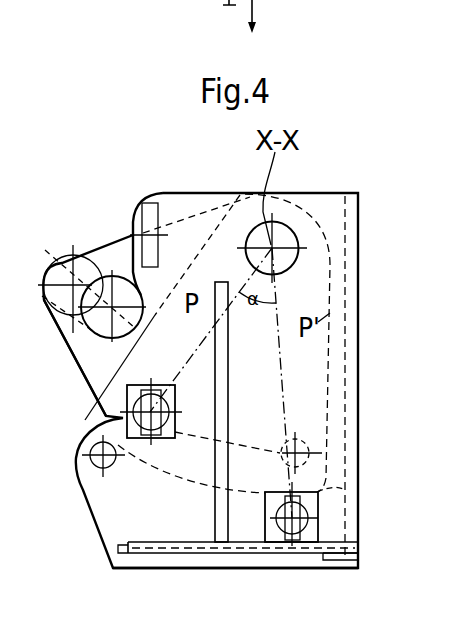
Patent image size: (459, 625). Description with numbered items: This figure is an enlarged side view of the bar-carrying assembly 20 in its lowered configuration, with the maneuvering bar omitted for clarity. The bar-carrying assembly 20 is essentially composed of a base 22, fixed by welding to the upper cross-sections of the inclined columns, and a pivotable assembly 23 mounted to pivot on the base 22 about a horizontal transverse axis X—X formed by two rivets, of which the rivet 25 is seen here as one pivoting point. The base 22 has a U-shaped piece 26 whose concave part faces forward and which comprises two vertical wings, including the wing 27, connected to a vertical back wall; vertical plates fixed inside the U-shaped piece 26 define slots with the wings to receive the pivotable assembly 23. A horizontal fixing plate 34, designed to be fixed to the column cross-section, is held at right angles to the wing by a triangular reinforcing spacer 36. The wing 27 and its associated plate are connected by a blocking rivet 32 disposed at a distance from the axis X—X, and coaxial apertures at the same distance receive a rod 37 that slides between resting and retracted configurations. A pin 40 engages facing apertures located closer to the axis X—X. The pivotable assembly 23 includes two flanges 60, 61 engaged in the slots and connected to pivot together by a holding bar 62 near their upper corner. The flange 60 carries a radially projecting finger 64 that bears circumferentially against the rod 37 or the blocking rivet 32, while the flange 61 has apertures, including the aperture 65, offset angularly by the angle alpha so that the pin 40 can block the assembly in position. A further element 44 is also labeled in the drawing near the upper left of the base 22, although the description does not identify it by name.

The bar-carrying assembly 20 is at (345, 153).
The base 22 is at (317, 571).
The pivotable assembly 23 is at (86, 394).
The rivet 25 is at (296, 260).
The U-shaped piece 26 is at (358, 455).
The vertical wing 27 is at (7, 488).
The blocking rivet 32 is at (100, 463).
The horizontal fixing plate 34 is at (160, 555).
The triangular reinforcing spacer 36 is at (230, 412).
The rod 37 is at (300, 493).
The pin 40 is at (127, 416).
The stop block 44 is at (142, 212).
The flange 60 is at (204, 210).
The flange 61 is at (199, 462).
The holding bar 62 is at (50, 262).
The radially projecting finger 64 is at (333, 523).
The aperture 65 is at (307, 448).